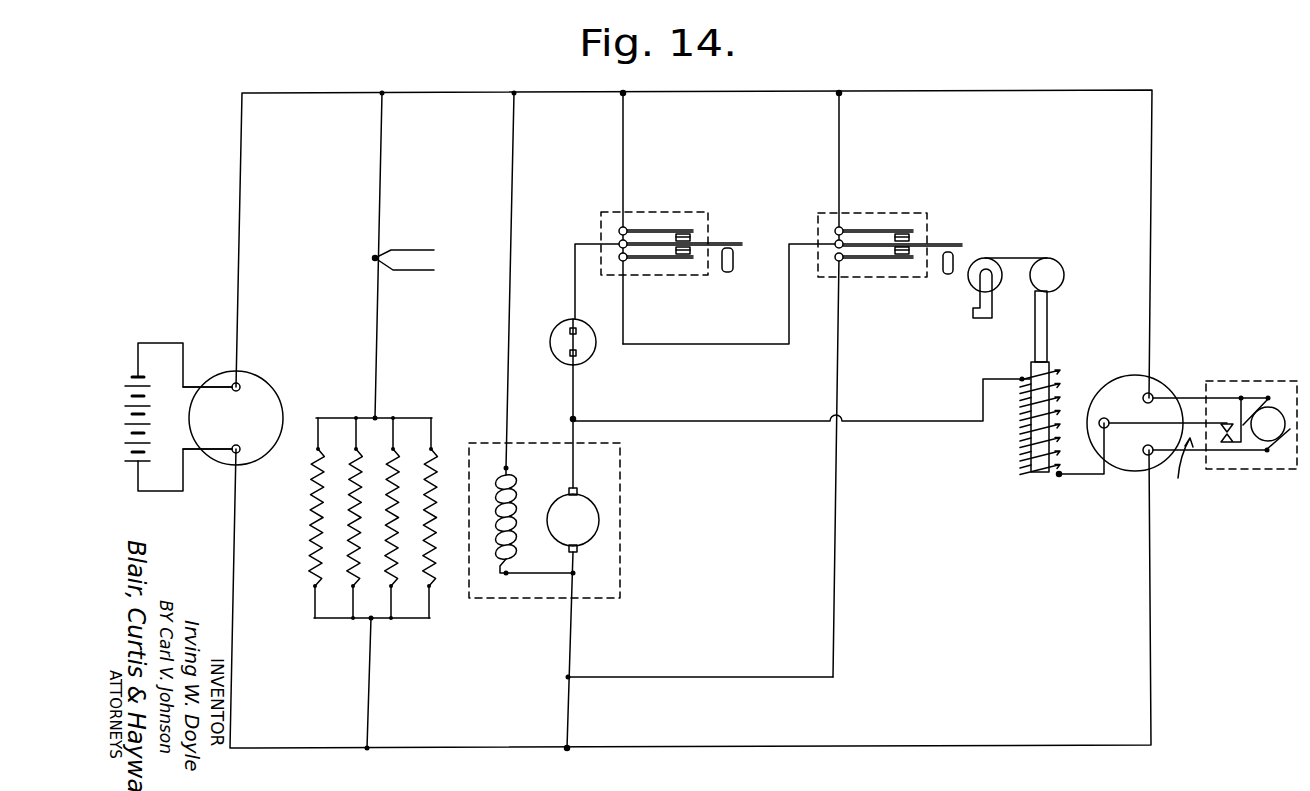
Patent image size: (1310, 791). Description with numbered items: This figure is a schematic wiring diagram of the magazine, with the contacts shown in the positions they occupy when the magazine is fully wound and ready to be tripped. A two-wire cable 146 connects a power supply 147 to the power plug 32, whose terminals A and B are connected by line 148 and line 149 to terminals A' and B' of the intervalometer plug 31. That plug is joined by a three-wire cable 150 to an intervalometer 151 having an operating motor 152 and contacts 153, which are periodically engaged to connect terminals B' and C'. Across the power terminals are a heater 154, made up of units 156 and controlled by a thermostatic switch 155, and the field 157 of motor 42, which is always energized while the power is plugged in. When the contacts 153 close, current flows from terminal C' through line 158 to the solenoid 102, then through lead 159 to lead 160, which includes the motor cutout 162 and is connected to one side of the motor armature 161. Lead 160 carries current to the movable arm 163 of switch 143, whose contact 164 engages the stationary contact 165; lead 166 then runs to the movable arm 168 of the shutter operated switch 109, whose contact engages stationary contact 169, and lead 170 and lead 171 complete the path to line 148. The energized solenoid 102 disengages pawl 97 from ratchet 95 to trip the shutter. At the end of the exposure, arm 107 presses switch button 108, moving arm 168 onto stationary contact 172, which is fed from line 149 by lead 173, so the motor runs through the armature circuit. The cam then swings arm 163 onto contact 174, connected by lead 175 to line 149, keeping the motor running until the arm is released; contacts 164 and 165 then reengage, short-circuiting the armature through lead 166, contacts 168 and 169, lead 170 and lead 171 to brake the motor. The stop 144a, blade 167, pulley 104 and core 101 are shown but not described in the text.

The power supply 147 is at (125, 380).
The two-wire cable 146 is at (170, 380).
The power plug 32 is at (228, 360).
The heater 154 is at (412, 418).
The heater units 156 is at (312, 500).
The thermostatic switch 155 is at (388, 250).
The line 149 is at (242, 236).
The line 148 is at (234, 558).
The lead 175 is at (623, 128).
The lead 173 is at (839, 140).
The lead 170 is at (836, 357).
The switch 143 is at (690, 212).
The contact 174 is at (668, 235).
The contact 164 is at (690, 244).
The movable arm 163 is at (735, 240).
The stationary contact 165 is at (672, 252).
The stop 144a is at (733, 262).
The lead 166 is at (720, 344).
The motor cutout 162 is at (558, 325).
The lead 160 is at (573, 388).
The motor 42 is at (620, 502).
The motor armature 161 is at (605, 470).
The field 157 is at (498, 555).
The lead 171 is at (570, 640).
The lead 159 is at (880, 421).
The shutter operated switch 109 is at (910, 213).
The stationary contact 172 is at (885, 236).
The movable arm 168 is at (908, 244).
The switch blade 167 is at (935, 246).
The stationary contact 169 is at (890, 252).
The switch button 108 is at (953, 262).
The pulley 104 is at (1005, 258).
The arm 107 is at (992, 300).
The ratchet 95 is at (1062, 270).
The pawl 97 is at (1047, 316).
The solenoid core 101 is at (1046, 372).
The solenoid 102 is at (1024, 432).
The line 158 is at (1080, 474).
The intervalometer plug 31 is at (1162, 380).
The intervalometer 151 is at (1240, 380).
The operating motor 152 is at (1285, 408).
The contacts 153 is at (1230, 470).
The three-wire cable 150 is at (1178, 472).